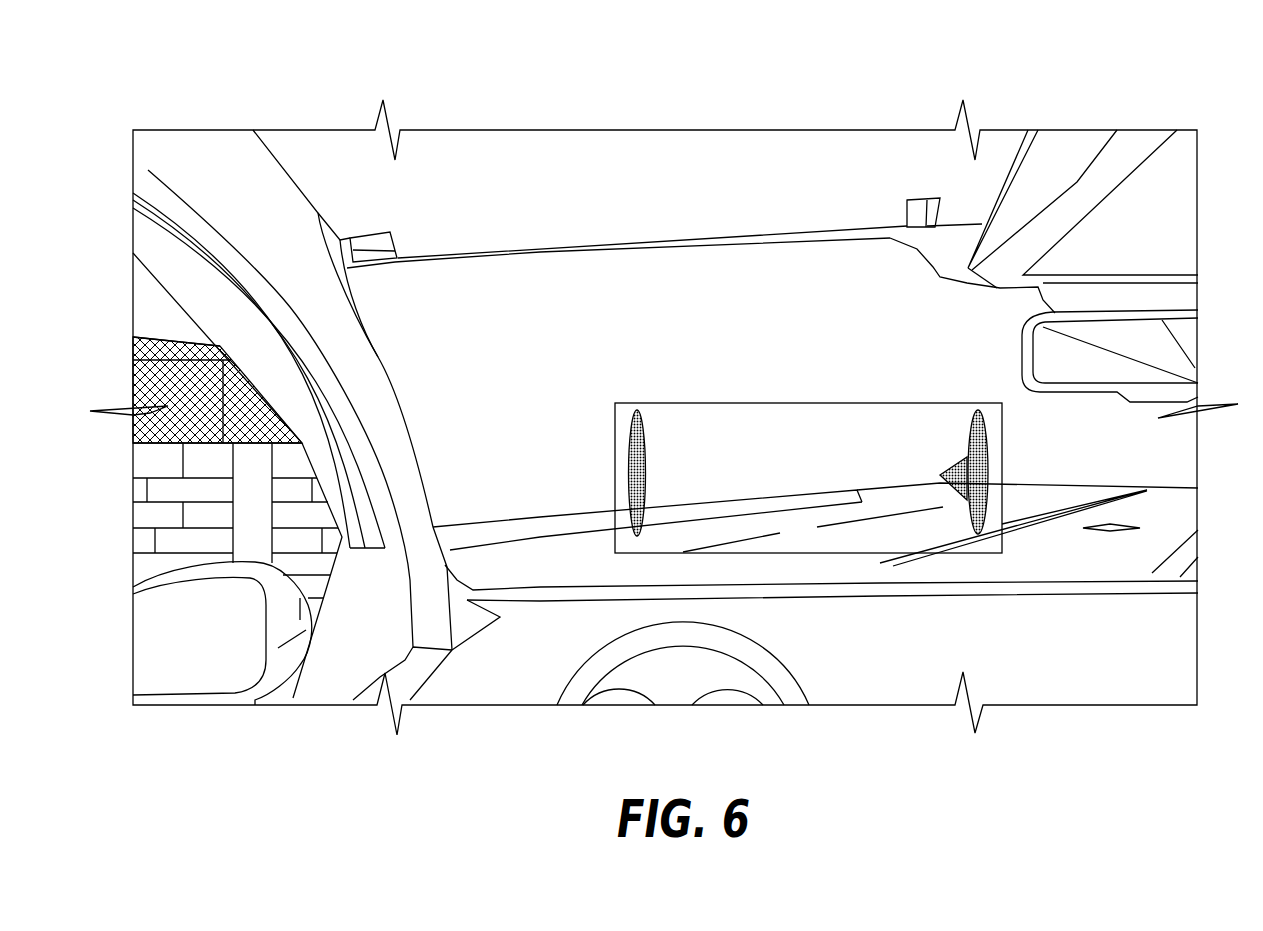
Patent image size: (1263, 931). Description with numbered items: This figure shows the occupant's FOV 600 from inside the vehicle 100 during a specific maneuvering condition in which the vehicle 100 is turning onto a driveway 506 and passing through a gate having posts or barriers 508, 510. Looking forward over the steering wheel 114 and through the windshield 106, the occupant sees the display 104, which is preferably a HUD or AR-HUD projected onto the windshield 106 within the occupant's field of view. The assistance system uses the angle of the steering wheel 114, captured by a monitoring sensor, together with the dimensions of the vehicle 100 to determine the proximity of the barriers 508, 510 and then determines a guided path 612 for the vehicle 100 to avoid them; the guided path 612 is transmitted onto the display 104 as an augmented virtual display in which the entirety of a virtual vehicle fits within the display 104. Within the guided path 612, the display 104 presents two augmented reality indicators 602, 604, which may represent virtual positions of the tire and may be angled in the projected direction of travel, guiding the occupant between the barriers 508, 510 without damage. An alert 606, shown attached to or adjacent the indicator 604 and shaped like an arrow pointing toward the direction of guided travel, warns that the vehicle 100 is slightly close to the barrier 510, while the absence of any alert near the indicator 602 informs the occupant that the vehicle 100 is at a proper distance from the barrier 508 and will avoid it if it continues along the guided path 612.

The vehicle 100 is at (200, 153).
The display 104 is at (707, 437).
The windshield 106 is at (513, 290).
The steering wheel 114 is at (773, 670).
The driveway 506 is at (1050, 512).
The barrier 508 is at (480, 530).
The barrier 510 is at (1037, 522).
The occupant's FOV 600 is at (827, 88).
The indicator 602 is at (628, 447).
The indicator 604 is at (990, 450).
The alert 606 is at (958, 465).
The guided path 612 is at (770, 397).